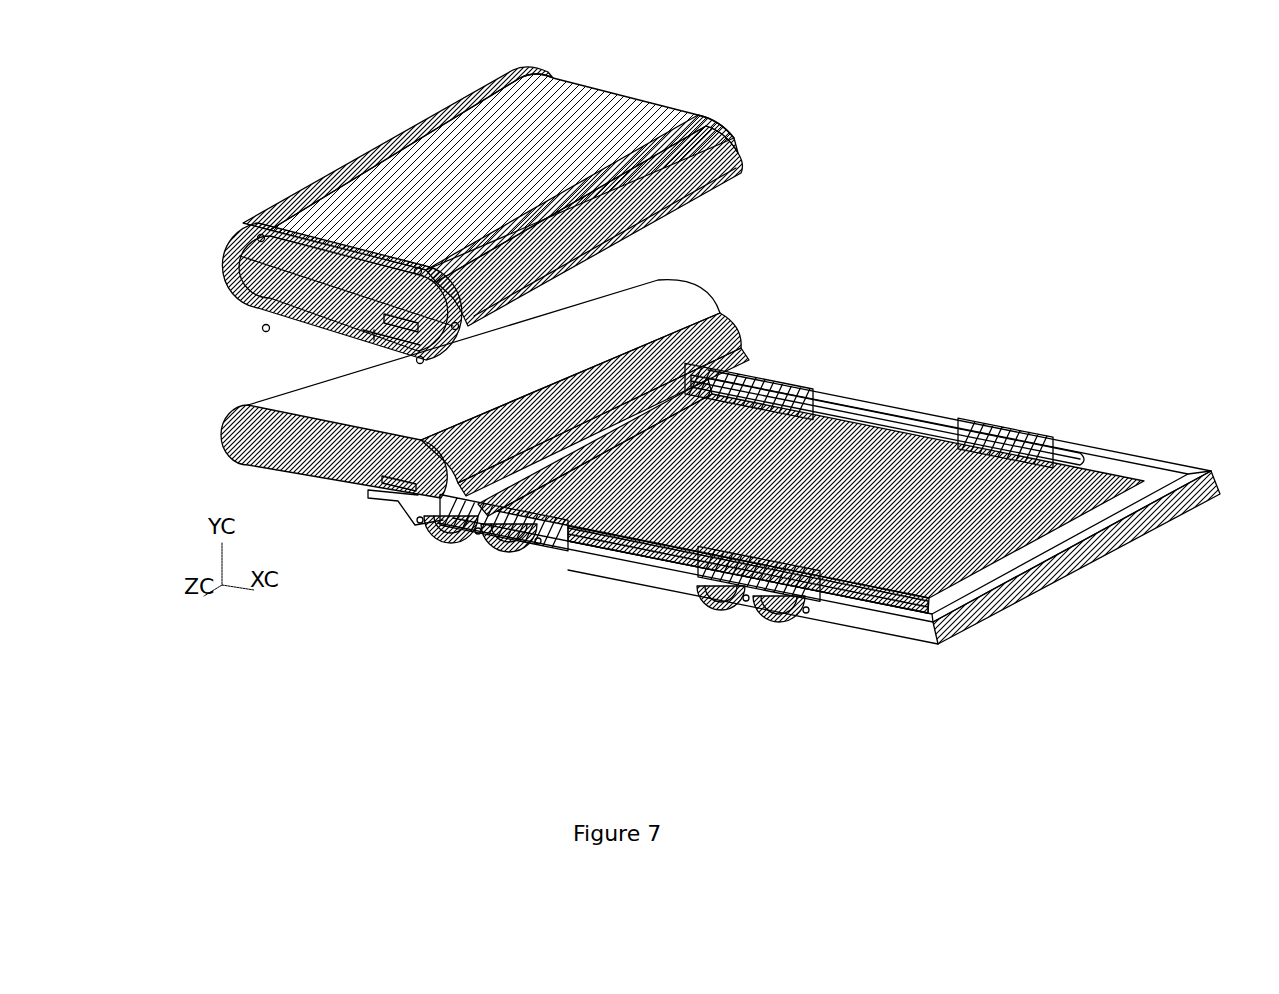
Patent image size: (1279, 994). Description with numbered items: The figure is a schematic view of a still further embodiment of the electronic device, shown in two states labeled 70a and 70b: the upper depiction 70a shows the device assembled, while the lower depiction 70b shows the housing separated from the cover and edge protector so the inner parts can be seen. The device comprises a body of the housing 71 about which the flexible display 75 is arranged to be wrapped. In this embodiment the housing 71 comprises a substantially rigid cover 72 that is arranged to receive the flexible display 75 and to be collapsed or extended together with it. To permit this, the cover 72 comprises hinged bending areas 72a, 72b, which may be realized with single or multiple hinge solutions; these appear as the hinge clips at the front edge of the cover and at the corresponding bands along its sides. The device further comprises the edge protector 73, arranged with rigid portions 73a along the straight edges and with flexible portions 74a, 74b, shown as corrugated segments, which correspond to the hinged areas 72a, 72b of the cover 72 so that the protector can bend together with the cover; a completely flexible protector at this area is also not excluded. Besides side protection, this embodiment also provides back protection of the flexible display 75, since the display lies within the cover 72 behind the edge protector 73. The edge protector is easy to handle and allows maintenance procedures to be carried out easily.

The electronic device embodiment (first view) 70a is at (300, 156).
The electronic device embodiment (second view) 70b is at (205, 489).
The housing 71 is at (265, 295).
The cover 72 is at (560, 113).
The hinged bending area 72a is at (733, 163).
The hinged bending area 72b is at (465, 102).
The edge protector 73 is at (1107, 463).
The rigid portion 73a is at (867, 400).
The flexible portion 74a is at (770, 377).
The flexible portion 74b is at (977, 423).
The flexible display 75 is at (920, 553).